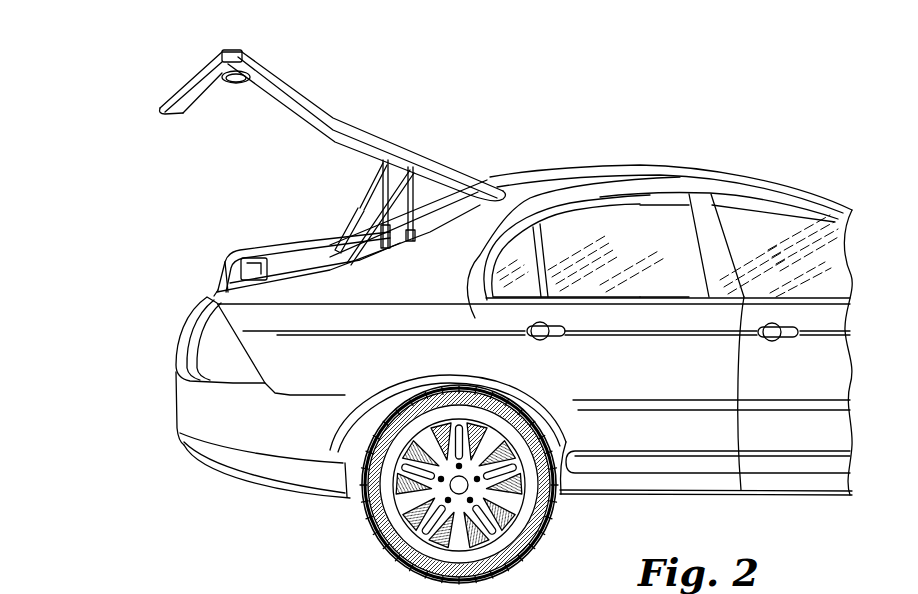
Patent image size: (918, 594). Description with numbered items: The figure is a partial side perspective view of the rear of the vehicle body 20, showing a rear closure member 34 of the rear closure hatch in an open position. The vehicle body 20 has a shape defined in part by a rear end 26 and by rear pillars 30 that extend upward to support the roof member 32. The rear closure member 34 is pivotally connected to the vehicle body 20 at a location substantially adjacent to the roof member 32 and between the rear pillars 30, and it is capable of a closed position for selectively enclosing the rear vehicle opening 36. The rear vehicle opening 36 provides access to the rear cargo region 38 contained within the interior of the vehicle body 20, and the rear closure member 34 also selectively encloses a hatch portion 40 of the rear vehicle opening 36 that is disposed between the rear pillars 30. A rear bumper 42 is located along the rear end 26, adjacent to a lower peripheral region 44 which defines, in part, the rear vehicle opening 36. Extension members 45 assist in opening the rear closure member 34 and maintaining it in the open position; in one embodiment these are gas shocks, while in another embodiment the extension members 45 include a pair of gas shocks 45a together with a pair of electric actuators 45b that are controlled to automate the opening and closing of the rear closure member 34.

The vehicle body 20 is at (748, 54).
The rear end 26 is at (130, 437).
The rear pillars 30 is at (470, 238).
The roof member 32 is at (657, 157).
The rear closure member 34 is at (369, 73).
The rear vehicle opening 36 is at (297, 248).
The rear cargo region 38 is at (316, 221).
The hatch portion 40 is at (443, 212).
The rear bumper 42 is at (155, 373).
The lower peripheral region 44 is at (193, 342).
The extension members 45 is at (368, 188).
The gas shocks 45a is at (344, 218).
The electric actuators 45b is at (420, 183).